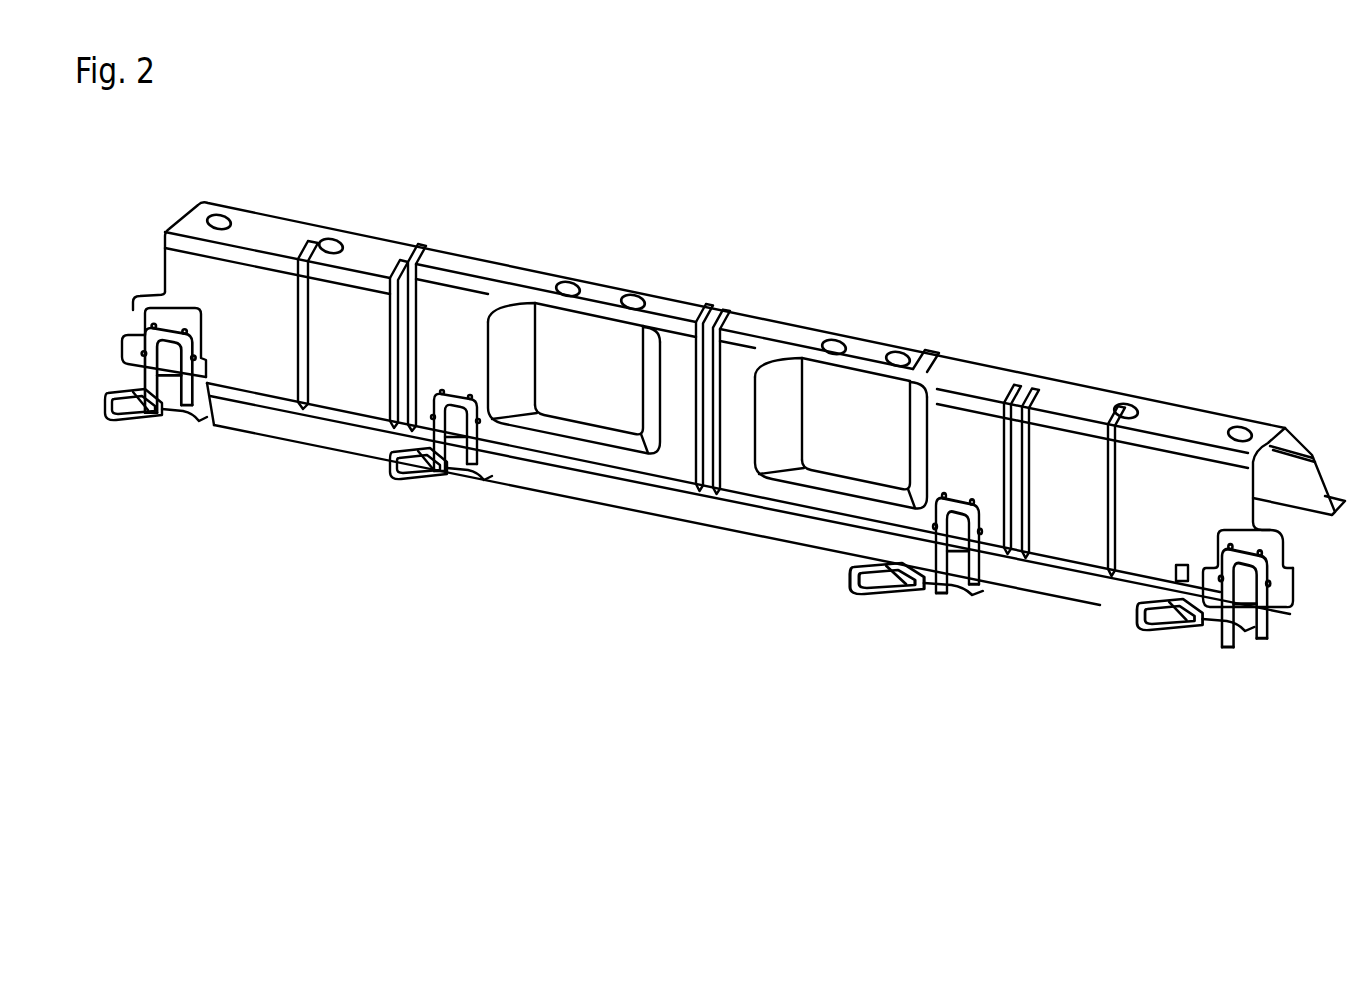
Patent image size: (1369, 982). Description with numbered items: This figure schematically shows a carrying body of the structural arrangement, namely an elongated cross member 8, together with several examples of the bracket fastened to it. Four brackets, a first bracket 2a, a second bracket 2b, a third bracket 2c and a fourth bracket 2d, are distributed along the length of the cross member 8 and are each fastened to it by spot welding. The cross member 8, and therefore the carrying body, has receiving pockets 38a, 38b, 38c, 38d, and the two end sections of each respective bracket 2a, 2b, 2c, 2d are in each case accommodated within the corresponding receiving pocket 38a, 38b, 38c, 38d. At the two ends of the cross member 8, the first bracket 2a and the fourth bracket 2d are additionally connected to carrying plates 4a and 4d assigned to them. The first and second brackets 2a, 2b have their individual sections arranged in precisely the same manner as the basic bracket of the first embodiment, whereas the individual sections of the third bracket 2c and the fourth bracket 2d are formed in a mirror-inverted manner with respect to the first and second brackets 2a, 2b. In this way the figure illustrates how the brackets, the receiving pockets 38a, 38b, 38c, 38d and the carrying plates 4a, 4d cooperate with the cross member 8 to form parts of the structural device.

The cross member 8 is at (973, 360).
The first bracket 2a is at (1249, 638).
The second bracket 2b is at (926, 588).
The third bracket 2c is at (444, 486).
The fourth bracket 2d is at (132, 415).
The receiving pocket 38a is at (1262, 574).
The receiving pocket 38b is at (988, 547).
The receiving pocket 38c is at (487, 474).
The receiving pocket 38d is at (138, 338).
The carrying plate 4a is at (1268, 597).
The carrying plate 4d is at (128, 362).